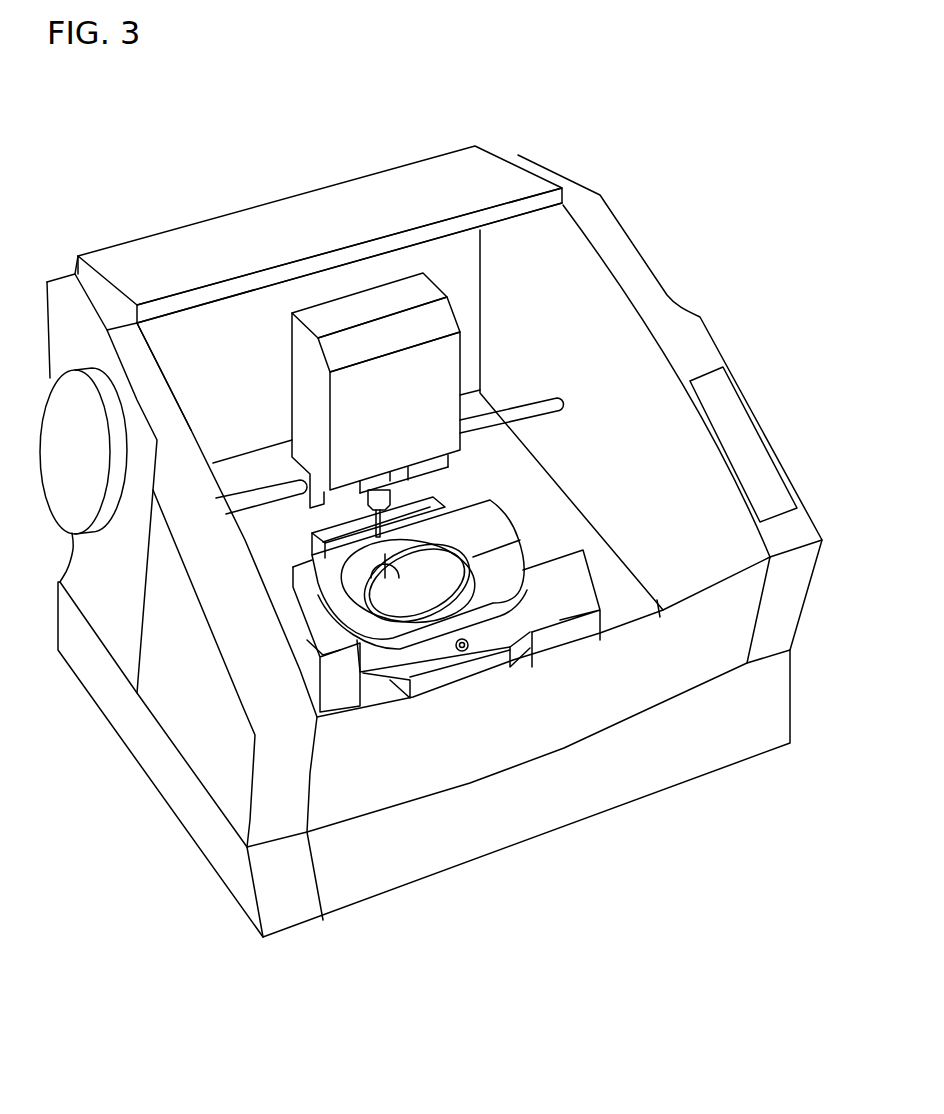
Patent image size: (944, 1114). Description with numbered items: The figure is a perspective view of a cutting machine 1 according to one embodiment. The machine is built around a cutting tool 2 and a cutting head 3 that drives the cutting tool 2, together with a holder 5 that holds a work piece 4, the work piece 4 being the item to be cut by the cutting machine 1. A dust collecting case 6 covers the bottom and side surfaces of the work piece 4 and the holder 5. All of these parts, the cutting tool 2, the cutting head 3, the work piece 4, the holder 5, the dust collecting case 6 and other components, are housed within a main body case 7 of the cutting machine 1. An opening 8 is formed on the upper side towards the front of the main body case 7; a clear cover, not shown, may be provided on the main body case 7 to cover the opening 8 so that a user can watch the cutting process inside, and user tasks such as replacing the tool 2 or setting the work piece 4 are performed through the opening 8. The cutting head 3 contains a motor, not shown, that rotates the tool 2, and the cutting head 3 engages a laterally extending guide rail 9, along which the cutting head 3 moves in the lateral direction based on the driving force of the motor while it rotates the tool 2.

The cutting machine 1 is at (692, 234).
The cutting tool 2 is at (457, 507).
The cutting head 3 is at (440, 373).
The work piece 4 is at (505, 568).
The holder 5 is at (503, 607).
The dust collecting case 6 is at (520, 540).
The main body case 7 is at (350, 190).
The opening 8 is at (212, 342).
The guide rail 9 is at (552, 397).